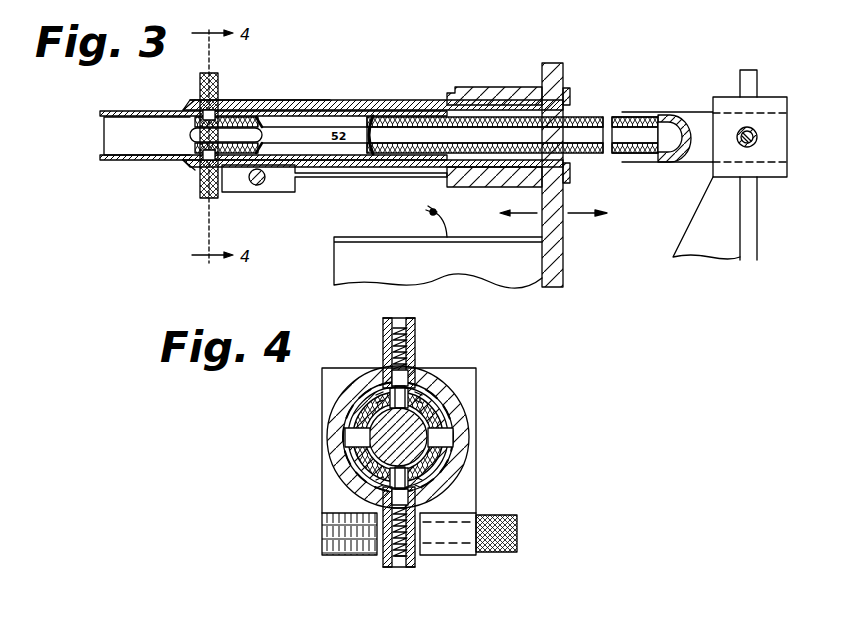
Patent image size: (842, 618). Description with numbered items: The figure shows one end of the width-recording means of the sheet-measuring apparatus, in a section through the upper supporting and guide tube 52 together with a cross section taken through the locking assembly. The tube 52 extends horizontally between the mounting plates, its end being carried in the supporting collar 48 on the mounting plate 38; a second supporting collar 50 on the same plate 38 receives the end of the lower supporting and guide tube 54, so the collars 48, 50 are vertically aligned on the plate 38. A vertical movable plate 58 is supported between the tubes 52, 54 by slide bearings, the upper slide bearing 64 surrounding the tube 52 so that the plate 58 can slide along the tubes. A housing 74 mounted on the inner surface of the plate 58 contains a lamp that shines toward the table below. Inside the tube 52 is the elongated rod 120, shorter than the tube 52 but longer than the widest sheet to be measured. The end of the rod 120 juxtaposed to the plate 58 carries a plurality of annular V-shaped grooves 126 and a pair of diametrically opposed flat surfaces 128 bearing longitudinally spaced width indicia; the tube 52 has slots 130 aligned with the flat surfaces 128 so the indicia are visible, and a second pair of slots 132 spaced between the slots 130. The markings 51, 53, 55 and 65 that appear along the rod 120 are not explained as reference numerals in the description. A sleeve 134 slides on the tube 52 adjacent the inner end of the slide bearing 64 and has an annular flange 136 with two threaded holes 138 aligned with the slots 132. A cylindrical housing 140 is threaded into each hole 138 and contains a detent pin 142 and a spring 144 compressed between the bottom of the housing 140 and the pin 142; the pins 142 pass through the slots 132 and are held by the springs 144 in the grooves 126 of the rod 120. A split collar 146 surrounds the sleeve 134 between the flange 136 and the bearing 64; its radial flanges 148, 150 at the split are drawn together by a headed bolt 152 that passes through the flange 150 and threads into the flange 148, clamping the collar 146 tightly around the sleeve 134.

In FIG. 3, the mounting plate 38 is at (748, 258).
In FIG. 3, the supporting collar 48 is at (733, 107).
In FIG. 3, the supporting collar 50 is at (226, 135).
In FIG. 3, the shaft segment 51 is at (257, 136).
In FIG. 3, the supporting and guide tube 52 is at (115, 110).
In FIG. 4, the supporting and guide tube 52 is at (370, 412).
In FIG. 3, the shaft segment 53 is at (432, 135).
In FIG. 3, the supporting and guide tube 54 is at (484, 136).
In FIG. 3, the shaft segment 55 is at (559, 136).
In FIG. 3, the vertical plate 58 is at (553, 238).
In FIG. 3, the slide bearing 64 is at (513, 90).
In FIG. 3, the shaft segment 65 is at (662, 137).
In FIG. 3, the housing 74 is at (348, 266).
In FIG. 3, the elongated rod 120 is at (127, 147).
In FIG. 4, the elongated rod 120 is at (400, 440).
In FIG. 3, the annular V-shaped grooves 126 is at (407, 120).
In FIG. 4, the annular V-shaped grooves 126 is at (443, 405).
In FIG. 3, the flat surfaces 128 is at (382, 134).
In FIG. 4, the flat surfaces 128 is at (360, 437).
In FIG. 4, the slots 130 is at (357, 450).
In FIG. 3, the slots 132 is at (175, 112).
In FIG. 4, the slots 132 is at (380, 397).
In FIG. 3, the sleeve 134 is at (248, 99).
In FIG. 3, the annular flange 136 is at (193, 172).
In FIG. 4, the annular flange 136 is at (363, 387).
In FIG. 4, the holes 138 is at (447, 380).
In FIG. 4, the cylindrical housing 140 is at (383, 325).
In FIG. 4, the detent pin 142 is at (397, 502).
In FIG. 4, the spring 144 is at (417, 557).
In FIG. 3, the split collar 146 is at (315, 100).
In FIG. 4, the split collar 146 is at (448, 371).
In FIG. 3, the flange 148 is at (273, 183).
In FIG. 4, the flange 148 is at (335, 550).
In FIG. 4, the flange 150 is at (453, 552).
In FIG. 4, the headed bolt 152 is at (517, 520).